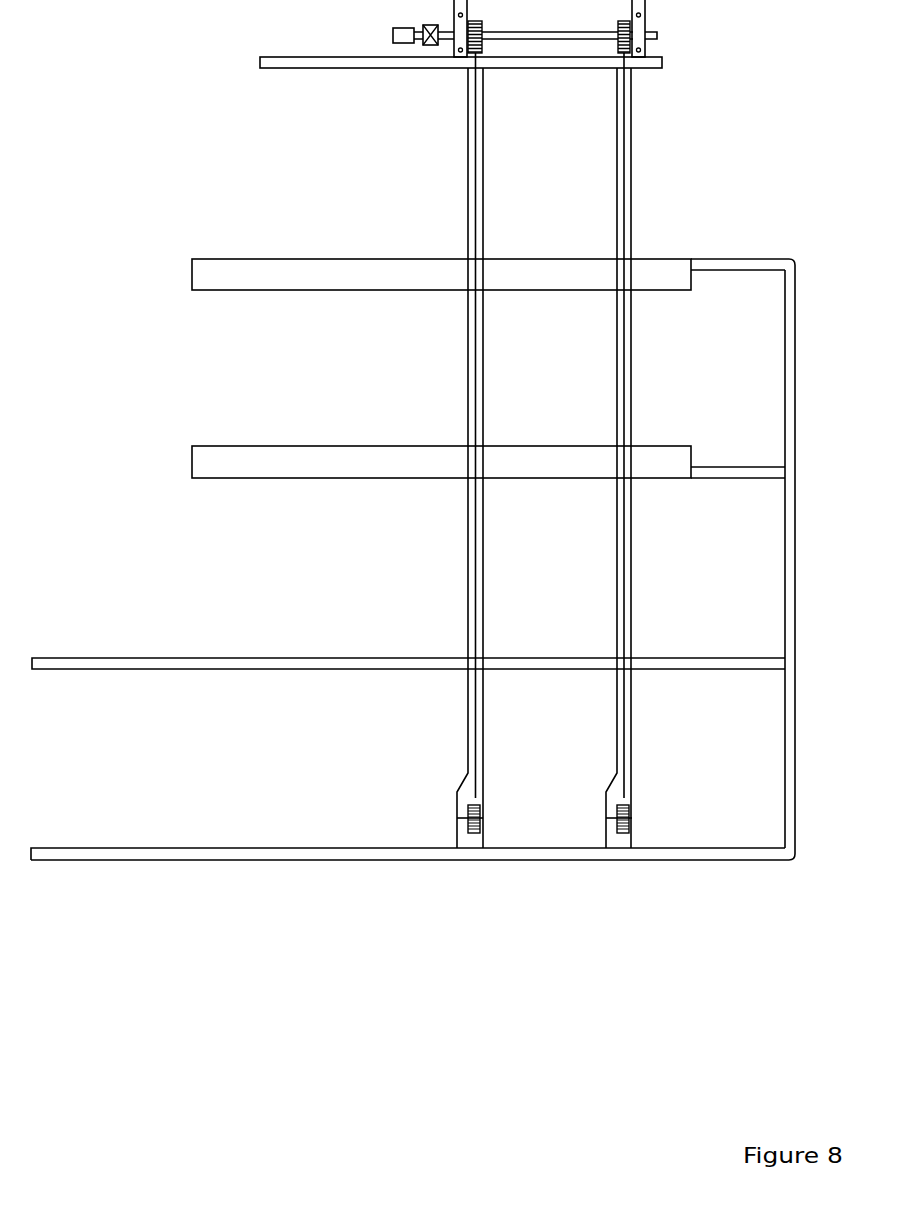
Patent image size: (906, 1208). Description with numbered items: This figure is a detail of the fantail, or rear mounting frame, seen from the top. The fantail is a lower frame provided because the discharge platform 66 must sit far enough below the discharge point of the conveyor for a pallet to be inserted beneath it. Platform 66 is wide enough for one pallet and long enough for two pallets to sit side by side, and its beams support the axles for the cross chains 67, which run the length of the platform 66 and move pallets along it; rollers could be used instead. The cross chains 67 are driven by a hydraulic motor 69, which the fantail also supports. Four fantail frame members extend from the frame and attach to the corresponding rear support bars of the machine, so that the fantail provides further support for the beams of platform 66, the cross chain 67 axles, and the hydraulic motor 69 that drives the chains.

The platform 66 is at (648, 14).
The cross chains 67 is at (476, 146).
The hydraulic motor 69 is at (432, 47).